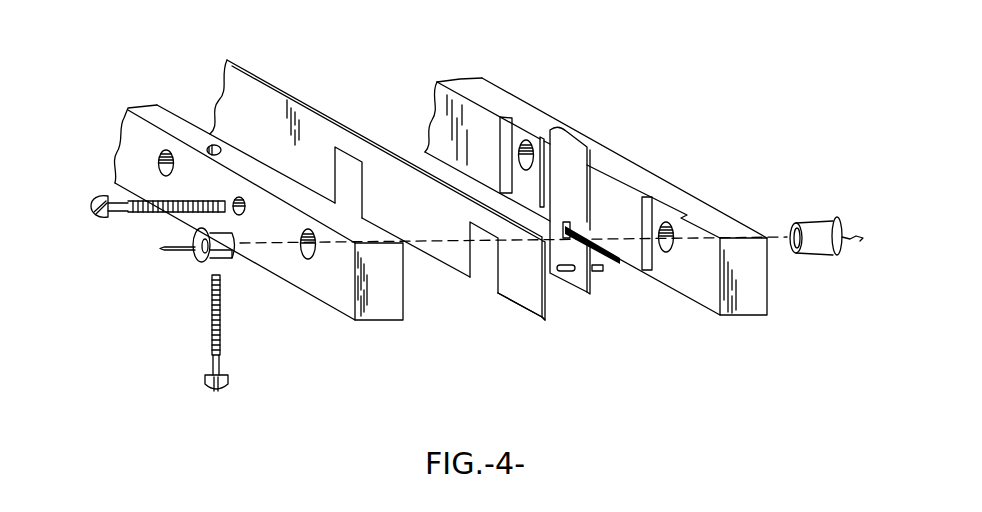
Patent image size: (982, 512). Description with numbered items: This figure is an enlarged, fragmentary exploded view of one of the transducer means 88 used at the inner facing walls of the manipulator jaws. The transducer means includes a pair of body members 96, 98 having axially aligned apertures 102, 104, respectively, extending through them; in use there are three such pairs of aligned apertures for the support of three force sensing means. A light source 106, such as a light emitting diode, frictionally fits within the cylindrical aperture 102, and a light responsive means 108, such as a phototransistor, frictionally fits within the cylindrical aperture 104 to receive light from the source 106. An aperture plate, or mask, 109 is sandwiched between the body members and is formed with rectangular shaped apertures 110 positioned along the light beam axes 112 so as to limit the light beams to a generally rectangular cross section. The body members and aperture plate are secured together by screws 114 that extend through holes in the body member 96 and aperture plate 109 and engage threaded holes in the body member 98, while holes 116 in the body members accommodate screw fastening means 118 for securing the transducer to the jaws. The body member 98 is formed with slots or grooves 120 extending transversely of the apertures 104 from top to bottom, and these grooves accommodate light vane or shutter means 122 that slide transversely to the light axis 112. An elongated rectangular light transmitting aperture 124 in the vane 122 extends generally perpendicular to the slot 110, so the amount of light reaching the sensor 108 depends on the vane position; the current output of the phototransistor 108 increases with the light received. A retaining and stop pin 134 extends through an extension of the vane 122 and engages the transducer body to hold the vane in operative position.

The transducer means 88 is at (106, 121).
The body member 96 is at (338, 314).
The body member 98 is at (740, 318).
The apertures 102 is at (158, 148).
The apertures 104 is at (527, 148).
The light source 106 is at (198, 262).
The light responsive means 108 is at (812, 218).
The aperture plate 109 is at (544, 317).
The rectangular shaped apertures 110 is at (342, 162).
The light beam axes 112 is at (459, 247).
The screws 114 is at (97, 217).
The holes 116 is at (210, 142).
The screw fastening means 118 is at (211, 352).
The slots or grooves 120 is at (515, 128).
The light vane or shutter means 122 is at (569, 152).
The light transmitting aperture 124 is at (618, 251).
The retaining and stop pin 134 is at (606, 272).